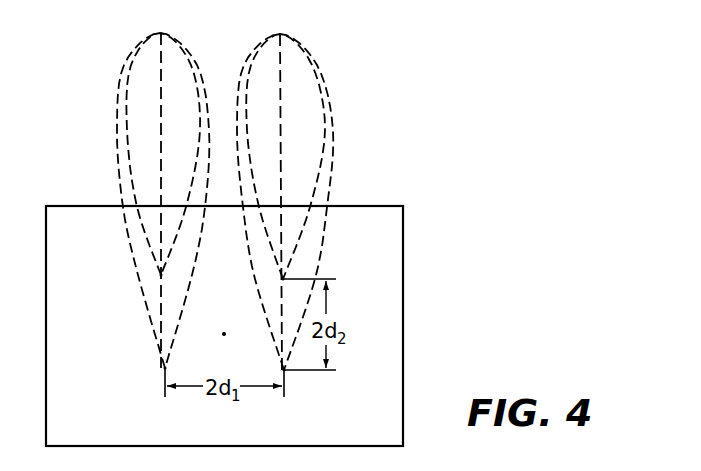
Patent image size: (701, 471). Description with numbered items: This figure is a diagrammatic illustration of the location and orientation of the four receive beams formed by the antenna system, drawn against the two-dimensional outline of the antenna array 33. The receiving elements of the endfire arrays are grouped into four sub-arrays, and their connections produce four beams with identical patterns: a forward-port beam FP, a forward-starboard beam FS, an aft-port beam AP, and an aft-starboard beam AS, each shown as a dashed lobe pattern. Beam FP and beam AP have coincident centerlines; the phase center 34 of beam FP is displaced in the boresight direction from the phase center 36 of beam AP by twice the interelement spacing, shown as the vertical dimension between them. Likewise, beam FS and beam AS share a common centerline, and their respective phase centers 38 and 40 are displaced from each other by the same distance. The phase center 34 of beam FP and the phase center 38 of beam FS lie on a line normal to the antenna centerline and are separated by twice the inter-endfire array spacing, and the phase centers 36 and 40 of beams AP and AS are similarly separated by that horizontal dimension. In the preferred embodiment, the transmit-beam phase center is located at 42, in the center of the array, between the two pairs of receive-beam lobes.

The two-dimensional outline of the antenna array 33 is at (403, 216).
The phase center of beam FP 34 is at (159, 276).
The phase center of beam AP 36 is at (163, 368).
The phase center of beam FS 38 is at (290, 276).
The phase center of beam AS 40 is at (285, 371).
The transmit-beam phase center 42 is at (224, 333).
The forward-port sub-array beam FP is at (126, 143).
The forward-starboard sub-array beam FS is at (321, 164).
The aft-port sub-array beam AP is at (146, 318).
The aft-starboard sub-array beam AS is at (320, 247).